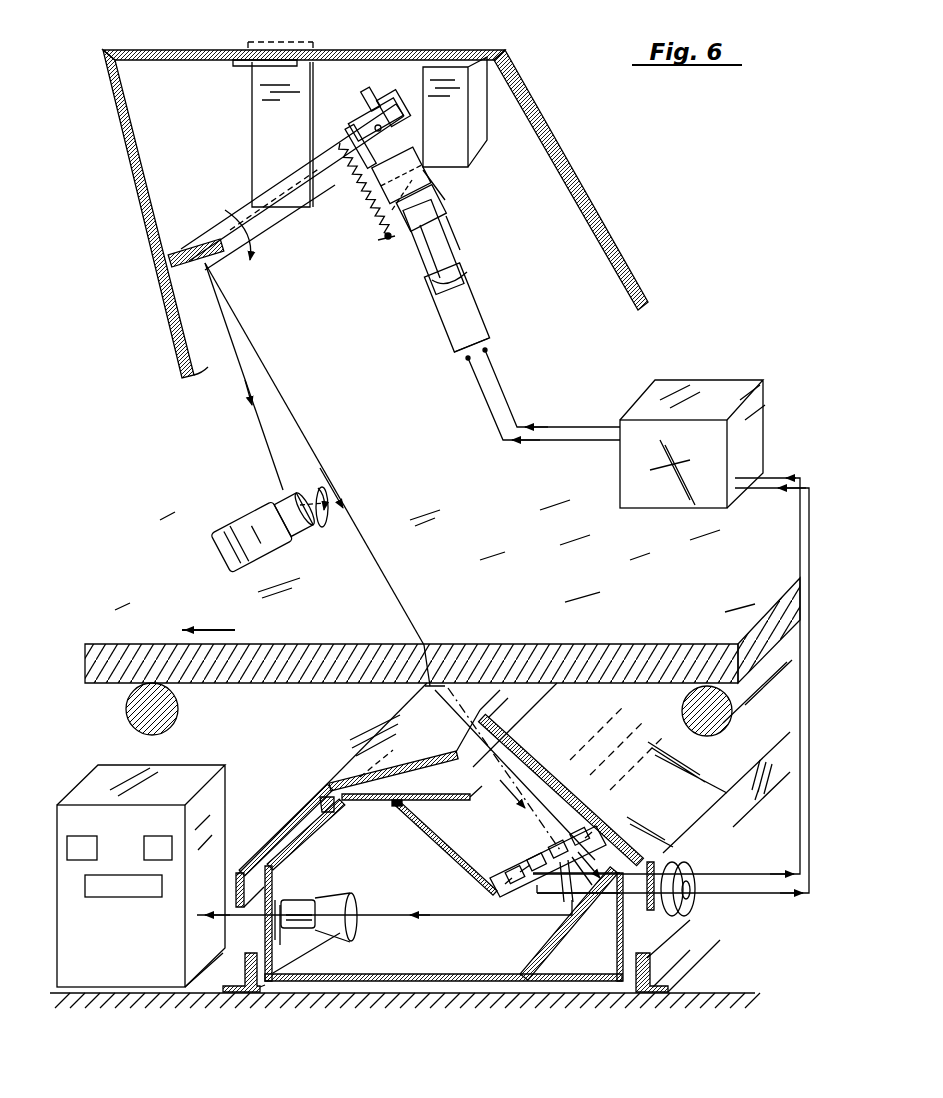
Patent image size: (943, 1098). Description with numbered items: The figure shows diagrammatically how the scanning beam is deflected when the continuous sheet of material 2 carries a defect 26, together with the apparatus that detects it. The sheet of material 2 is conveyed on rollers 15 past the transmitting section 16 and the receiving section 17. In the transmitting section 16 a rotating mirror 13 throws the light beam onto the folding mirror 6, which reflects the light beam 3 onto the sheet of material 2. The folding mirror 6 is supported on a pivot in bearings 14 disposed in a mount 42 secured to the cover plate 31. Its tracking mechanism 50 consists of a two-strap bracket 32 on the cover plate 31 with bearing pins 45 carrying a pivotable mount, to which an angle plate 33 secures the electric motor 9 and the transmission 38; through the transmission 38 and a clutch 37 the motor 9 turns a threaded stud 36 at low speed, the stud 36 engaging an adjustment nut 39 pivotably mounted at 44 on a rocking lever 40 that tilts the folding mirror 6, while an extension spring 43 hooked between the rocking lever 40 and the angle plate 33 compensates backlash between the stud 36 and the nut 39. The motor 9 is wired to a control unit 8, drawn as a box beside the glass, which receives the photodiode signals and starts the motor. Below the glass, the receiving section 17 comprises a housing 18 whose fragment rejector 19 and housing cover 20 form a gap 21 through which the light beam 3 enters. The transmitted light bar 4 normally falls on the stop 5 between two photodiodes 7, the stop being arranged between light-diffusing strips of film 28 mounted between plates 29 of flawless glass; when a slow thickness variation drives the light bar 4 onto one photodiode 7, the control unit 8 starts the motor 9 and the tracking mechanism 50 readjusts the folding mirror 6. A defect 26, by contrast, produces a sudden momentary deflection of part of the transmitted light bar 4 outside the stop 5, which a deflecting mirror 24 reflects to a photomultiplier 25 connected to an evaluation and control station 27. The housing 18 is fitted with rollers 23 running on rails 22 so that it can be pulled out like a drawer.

The continuous sheet of material 2 is at (301, 644).
The light beam 3 is at (430, 646).
The transmitted light bar 4 is at (522, 864).
The stop 5 is at (514, 870).
The folding mirror 6 is at (224, 260).
The photodiodes 7 is at (508, 880).
The control unit 8 is at (705, 388).
The electric motor 9 is at (470, 298).
The rotating mirror 13 is at (316, 522).
The bearings 14 is at (286, 194).
The rollers 15 is at (126, 716).
The transmitting section 16 is at (665, 205).
The receiving section 17 is at (655, 640).
The housing 18 is at (355, 893).
The fragment rejector 19 is at (496, 728).
The housing cover 20 is at (424, 755).
The gap 21 is at (476, 756).
The rails 22 is at (246, 954).
The rollers 23 is at (692, 875).
The deflecting mirror 24 is at (535, 961).
The photomultiplier 25 is at (328, 905).
The defect 26 is at (404, 694).
The evaluation and control station 27 is at (110, 948).
The light-diffusing strips of film 28 is at (496, 882).
The plates 29 is at (542, 906).
The cover plate 31 is at (355, 50).
The two-strap bracket 32 is at (460, 130).
The angle plate 33 is at (436, 208).
The threaded stud 36 is at (374, 100).
The clutch 37 is at (388, 240).
The transmission 38 is at (448, 248).
The adjustment nut 39 is at (395, 126).
The rocking lever 40 is at (322, 140).
The mount 42 is at (258, 98).
The extension spring 43 is at (374, 190).
The pivot mounting of the adjustment nut 44 is at (358, 170).
The bearing pins 45 is at (388, 234).
The tracking mechanism 50 is at (370, 305).